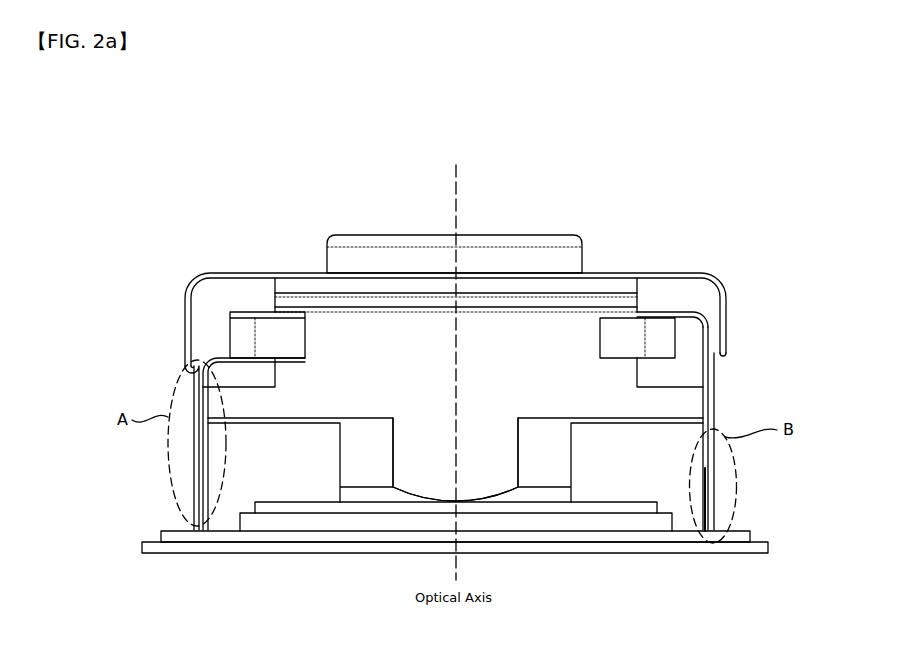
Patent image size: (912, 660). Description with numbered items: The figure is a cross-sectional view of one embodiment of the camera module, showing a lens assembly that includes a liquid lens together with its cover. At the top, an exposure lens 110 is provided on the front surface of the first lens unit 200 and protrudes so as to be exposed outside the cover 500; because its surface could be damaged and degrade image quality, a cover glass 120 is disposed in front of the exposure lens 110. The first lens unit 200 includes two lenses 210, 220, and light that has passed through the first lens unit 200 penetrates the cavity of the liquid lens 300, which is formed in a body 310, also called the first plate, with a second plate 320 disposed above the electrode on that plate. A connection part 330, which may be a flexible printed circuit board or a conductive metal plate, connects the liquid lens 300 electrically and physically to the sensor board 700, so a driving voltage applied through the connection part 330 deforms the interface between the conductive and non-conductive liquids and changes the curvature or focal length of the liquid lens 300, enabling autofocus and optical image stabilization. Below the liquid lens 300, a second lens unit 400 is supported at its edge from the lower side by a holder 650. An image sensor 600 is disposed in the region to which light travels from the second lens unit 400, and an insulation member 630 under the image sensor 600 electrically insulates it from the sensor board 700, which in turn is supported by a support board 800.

The exposure lens 110 is at (520, 262).
The cover glass 120 is at (405, 243).
The first lens unit 200 is at (633, 208).
The lens 210 is at (599, 292).
The lens 220 is at (627, 303).
The liquid lens 300 is at (684, 331).
The body 310 is at (670, 312).
The second plate 320 is at (673, 348).
The connection part 330 is at (707, 383).
The second lens unit 400 is at (503, 482).
The cover 500 is at (246, 273).
The image sensor 600 is at (573, 507).
The insulation member 630 is at (623, 517).
The holder 650 is at (695, 468).
The sensor board 700 is at (663, 540).
The support board 800 is at (696, 550).